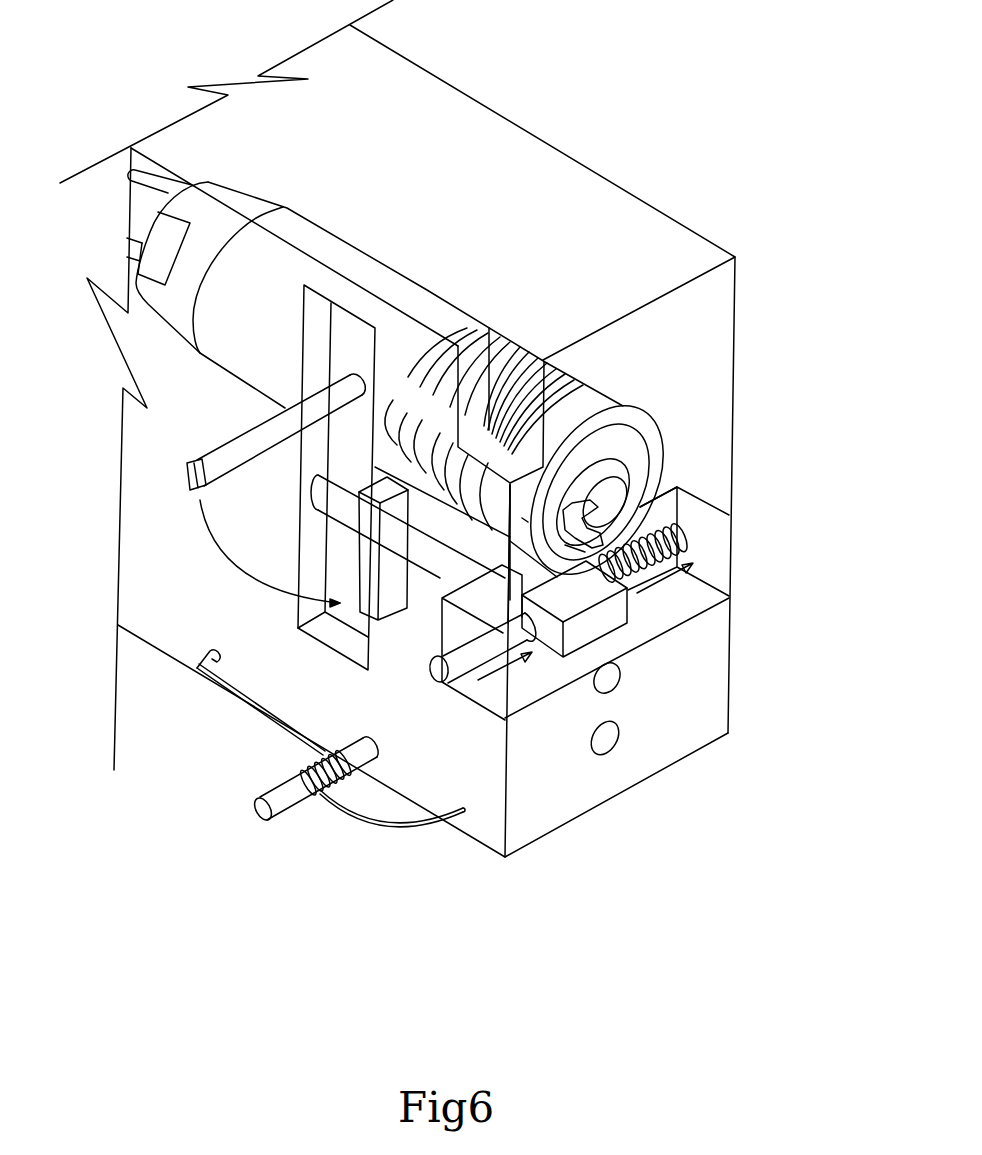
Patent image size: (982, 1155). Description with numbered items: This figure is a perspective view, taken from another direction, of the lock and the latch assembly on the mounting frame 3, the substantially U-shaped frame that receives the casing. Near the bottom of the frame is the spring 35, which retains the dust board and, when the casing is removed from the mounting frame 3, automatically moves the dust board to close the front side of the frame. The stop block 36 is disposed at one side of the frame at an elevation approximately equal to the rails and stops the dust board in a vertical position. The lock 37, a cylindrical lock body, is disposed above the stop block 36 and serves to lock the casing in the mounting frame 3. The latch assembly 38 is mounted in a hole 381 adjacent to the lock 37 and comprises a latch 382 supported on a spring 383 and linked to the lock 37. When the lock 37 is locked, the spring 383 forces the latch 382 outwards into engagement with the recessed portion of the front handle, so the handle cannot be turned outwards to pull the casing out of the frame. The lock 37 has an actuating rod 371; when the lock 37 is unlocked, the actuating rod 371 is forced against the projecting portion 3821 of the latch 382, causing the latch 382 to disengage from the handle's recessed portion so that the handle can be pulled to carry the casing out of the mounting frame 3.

The mounting frame 3 is at (617, 185).
The spring 35 is at (382, 835).
The stop block 36 is at (378, 622).
The lock 37 is at (387, 262).
The actuating rod 371 is at (257, 427).
The latch assembly 38 is at (696, 627).
The hole 381 is at (728, 514).
The latch 382 is at (613, 636).
The projecting portion 3821 is at (315, 480).
The spring 383 is at (690, 537).